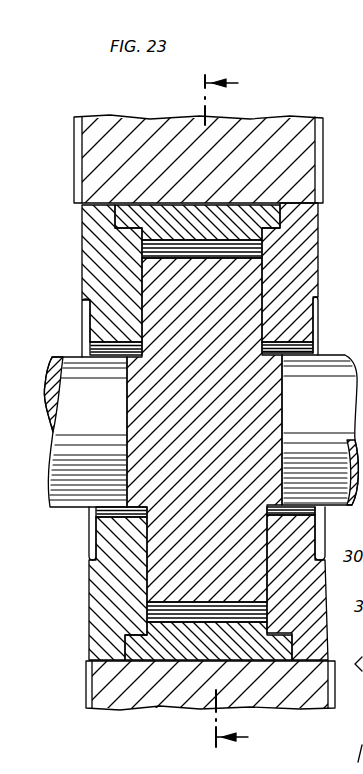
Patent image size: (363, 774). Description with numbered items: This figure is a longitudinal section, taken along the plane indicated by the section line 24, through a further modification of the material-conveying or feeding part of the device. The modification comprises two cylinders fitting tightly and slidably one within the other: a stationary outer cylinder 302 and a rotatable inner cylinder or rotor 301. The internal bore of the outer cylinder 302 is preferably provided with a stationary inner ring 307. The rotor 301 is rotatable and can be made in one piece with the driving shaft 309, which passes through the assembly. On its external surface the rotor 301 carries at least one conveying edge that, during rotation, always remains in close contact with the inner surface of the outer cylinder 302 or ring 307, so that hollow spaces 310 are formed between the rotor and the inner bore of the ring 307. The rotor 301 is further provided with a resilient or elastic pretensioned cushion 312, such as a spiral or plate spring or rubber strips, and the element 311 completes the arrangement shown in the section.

The section line 24- 24 is at (203, 414).
The inner cylinder or rotor 301 is at (153, 532).
The outer cylinder 302 is at (82, 159).
The stationary inner ring 307 is at (197, 202).
The driving shaft 309 is at (63, 452).
The hollow spaces 310 is at (284, 242).
The bushing 311 is at (82, 256).
The resilient or elastic pretensioned cushion 312 is at (345, 686).